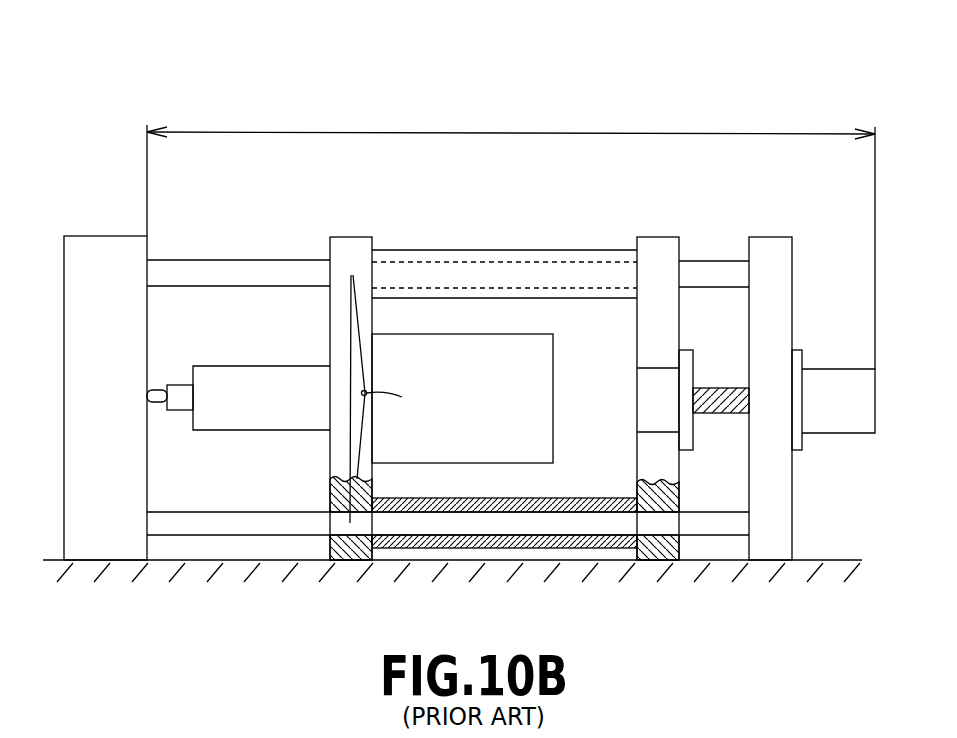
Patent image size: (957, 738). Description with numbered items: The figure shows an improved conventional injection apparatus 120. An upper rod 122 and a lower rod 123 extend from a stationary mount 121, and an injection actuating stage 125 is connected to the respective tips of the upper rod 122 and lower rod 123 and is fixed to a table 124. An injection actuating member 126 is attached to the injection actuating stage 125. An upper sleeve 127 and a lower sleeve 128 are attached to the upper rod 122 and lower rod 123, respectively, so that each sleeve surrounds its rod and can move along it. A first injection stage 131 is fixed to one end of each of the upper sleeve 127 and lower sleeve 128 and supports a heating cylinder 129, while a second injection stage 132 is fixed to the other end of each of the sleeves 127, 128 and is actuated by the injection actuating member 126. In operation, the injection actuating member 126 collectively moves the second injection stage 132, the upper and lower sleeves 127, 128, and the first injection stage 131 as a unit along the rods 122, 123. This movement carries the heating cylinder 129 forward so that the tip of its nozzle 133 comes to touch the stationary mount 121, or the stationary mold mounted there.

The improved injection apparatus 120 is at (665, 82).
The stationary mount 121 is at (102, 245).
The upper rod 122 is at (232, 275).
The lower rod 123 is at (250, 523).
The table 124 is at (533, 568).
The injection actuating stage 125 is at (770, 253).
The injection actuating member 126 is at (840, 412).
The upper sleeve 127 is at (505, 257).
The lower sleeve 128 is at (559, 498).
The heating cylinder 129 is at (250, 398).
The first injection stage 131 is at (350, 250).
The second injection stage 132 is at (657, 252).
The nozzle 133 is at (152, 392).